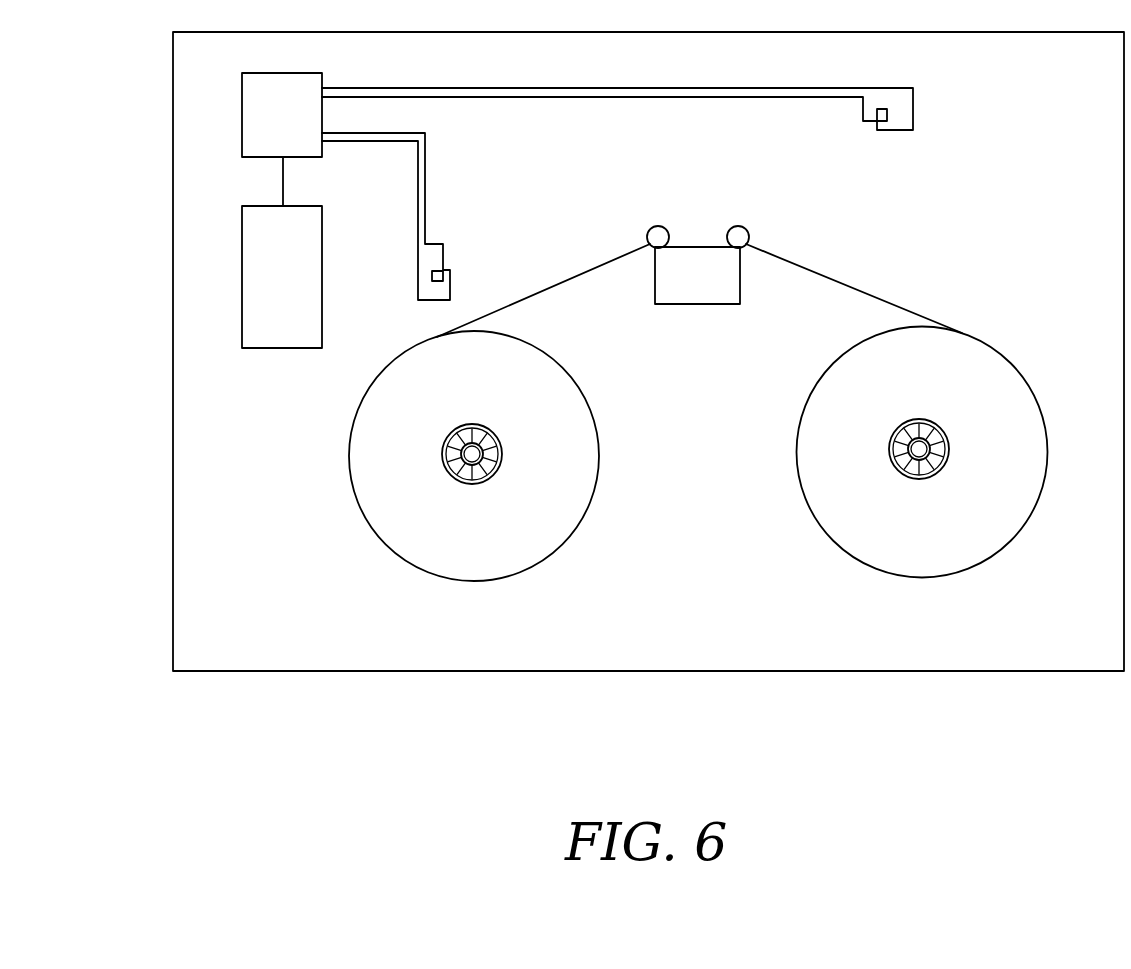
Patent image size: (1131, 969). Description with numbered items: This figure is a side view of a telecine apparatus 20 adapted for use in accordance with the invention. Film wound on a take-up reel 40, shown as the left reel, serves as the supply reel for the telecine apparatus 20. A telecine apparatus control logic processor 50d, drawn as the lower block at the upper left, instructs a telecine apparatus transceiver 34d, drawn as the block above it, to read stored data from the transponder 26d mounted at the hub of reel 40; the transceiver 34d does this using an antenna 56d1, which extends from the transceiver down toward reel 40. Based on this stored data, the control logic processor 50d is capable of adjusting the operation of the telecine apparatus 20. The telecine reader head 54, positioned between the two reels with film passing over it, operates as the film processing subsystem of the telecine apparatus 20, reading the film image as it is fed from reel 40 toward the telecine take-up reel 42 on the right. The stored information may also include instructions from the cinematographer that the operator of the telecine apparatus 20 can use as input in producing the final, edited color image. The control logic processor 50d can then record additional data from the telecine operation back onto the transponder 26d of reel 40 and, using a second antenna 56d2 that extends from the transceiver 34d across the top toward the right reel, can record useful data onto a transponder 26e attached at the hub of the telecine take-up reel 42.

The telecine apparatus 20 is at (727, 671).
The telecine apparatus transceiver 34d is at (242, 106).
The telecine apparatus control logic processor 50d is at (263, 348).
The antenna 56d1 is at (426, 192).
The antenna 56d2 is at (913, 108).
The telecine reader head 54 is at (708, 305).
The take-up reel 40 is at (351, 497).
The telecine take-up reel 42 is at (1027, 375).
The transponder 26d is at (455, 438).
The transponder 26e is at (903, 430).